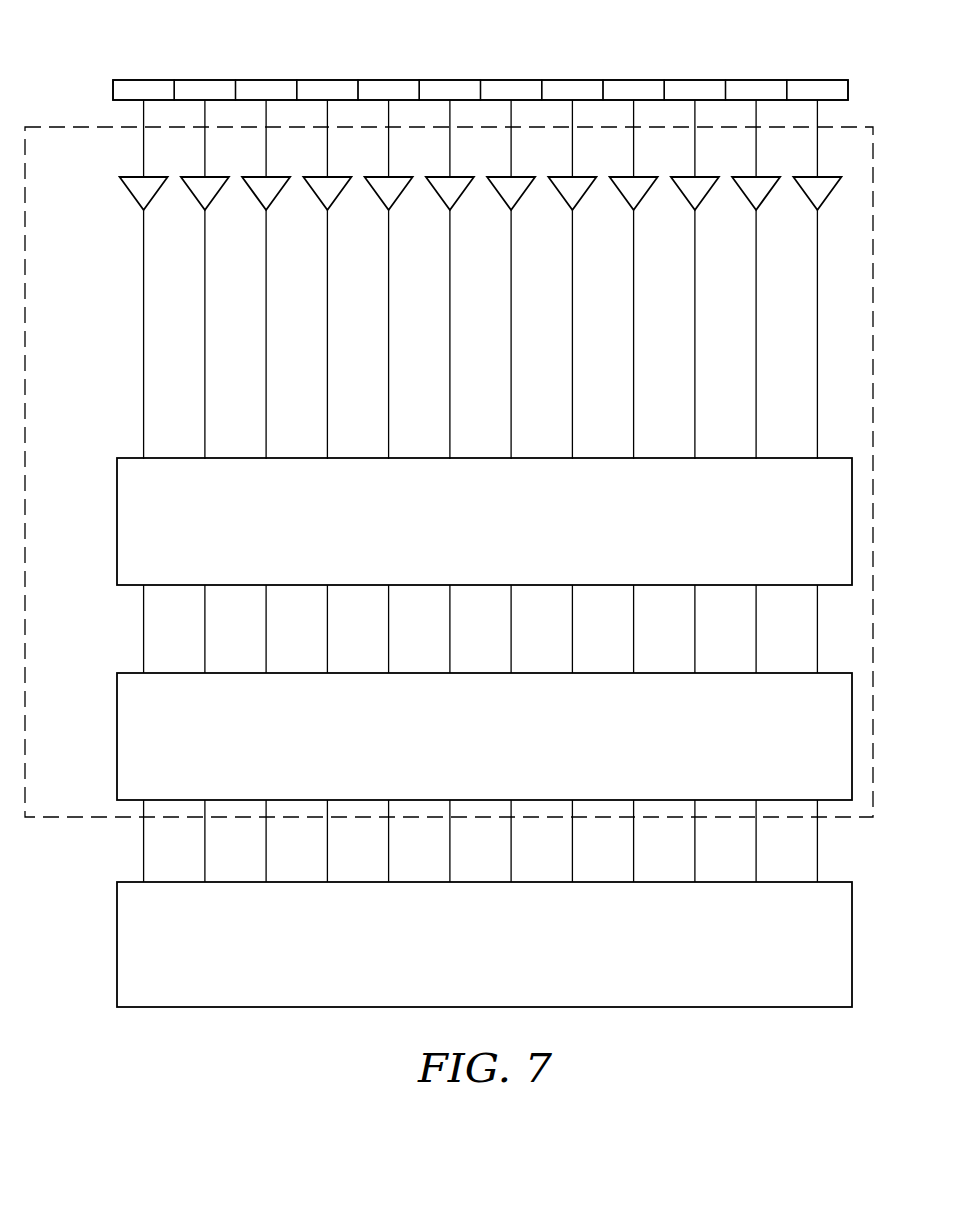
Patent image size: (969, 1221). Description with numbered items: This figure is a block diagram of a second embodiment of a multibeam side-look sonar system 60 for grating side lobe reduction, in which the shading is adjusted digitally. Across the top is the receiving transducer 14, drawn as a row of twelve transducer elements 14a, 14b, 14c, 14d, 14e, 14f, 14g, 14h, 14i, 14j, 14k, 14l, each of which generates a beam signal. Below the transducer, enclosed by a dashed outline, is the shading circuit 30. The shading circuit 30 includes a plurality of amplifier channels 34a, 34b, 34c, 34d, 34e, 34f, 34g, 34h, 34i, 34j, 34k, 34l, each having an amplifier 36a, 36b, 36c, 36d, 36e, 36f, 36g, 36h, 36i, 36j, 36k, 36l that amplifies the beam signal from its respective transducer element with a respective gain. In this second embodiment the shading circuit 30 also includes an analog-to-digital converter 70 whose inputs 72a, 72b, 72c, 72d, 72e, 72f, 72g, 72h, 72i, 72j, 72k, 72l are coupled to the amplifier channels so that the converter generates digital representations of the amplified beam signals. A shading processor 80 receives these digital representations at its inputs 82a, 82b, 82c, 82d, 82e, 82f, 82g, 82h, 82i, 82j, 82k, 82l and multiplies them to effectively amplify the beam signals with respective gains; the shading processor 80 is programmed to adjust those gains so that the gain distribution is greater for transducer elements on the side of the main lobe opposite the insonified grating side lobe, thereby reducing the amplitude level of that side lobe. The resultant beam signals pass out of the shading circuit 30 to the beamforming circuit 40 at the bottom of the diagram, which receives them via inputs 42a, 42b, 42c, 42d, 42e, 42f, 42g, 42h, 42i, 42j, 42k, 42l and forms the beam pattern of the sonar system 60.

The receiving transducer 14 is at (113, 92).
The transducer element 14a is at (143, 98).
The transducer element 14b is at (204, 98).
The transducer element 14c is at (266, 98).
The transducer element 14d is at (327, 98).
The transducer element 14e is at (388, 98).
The transducer element 14f is at (449, 98).
The transducer element 14g is at (511, 98).
The transducer element 14h is at (572, 98).
The transducer element 14i is at (633, 98).
The transducer element 14j is at (694, 98).
The transducer element 14k is at (756, 98).
The transducer element 14l is at (817, 98).
The shading circuit 30 is at (64, 791).
The amplifier 36a is at (156, 176).
The amplifier 36b is at (217, 176).
The amplifier 36c is at (278, 176).
The amplifier 36d is at (339, 176).
The amplifier 36e is at (401, 176).
The amplifier 36f is at (463, 176).
The amplifier 36g is at (523, 176).
The amplifier 36h is at (584, 176).
The amplifier 36i is at (645, 176).
The amplifier 36j is at (706, 176).
The amplifier 36k is at (769, 176).
The amplifier 36l is at (827, 176).
The amplifier channel 34a is at (170, 305).
The amplifier channel 34b is at (231, 305).
The amplifier channel 34c is at (292, 305).
The amplifier channel 34d is at (353, 305).
The amplifier channel 34e is at (415, 305).
The amplifier channel 34f is at (476, 305).
The amplifier channel 34g is at (537, 305).
The amplifier channel 34h is at (598, 305).
The amplifier channel 34i is at (658, 305).
The amplifier channel 34j is at (719, 305).
The amplifier channel 34k is at (782, 305).
The amplifier channel 34l is at (841, 305).
The analog-to-digital converter 70 is at (117, 508).
The input 72a is at (119, 429).
The input 72b is at (180, 429).
The input 72c is at (241, 429).
The input 72d is at (302, 429).
The input 72e is at (364, 429).
The input 72f is at (425, 429).
The input 72g is at (486, 429).
The input 72h is at (547, 429).
The input 72i is at (609, 429).
The input 72j is at (670, 429).
The input 72k is at (732, 429).
The input 72l is at (793, 429).
The shading processor 80 is at (117, 724).
The input 82a is at (119, 629).
The input 82b is at (180, 629).
The input 82c is at (241, 629).
The input 82d is at (302, 629).
The input 82e is at (364, 629).
The input 82f is at (425, 629).
The input 82g is at (486, 629).
The input 82h is at (547, 629).
The input 82i is at (609, 629).
The input 82j is at (670, 629).
The input 82k is at (732, 629).
The input 82l is at (793, 629).
The beamforming circuit 40 is at (117, 925).
The input 42a is at (119, 841).
The input 42b is at (180, 841).
The input 42c is at (241, 841).
The input 42d is at (302, 841).
The input 42e is at (364, 841).
The input 42f is at (425, 841).
The input 42g is at (486, 841).
The input 42h is at (547, 841).
The input 42i is at (609, 841).
The input 42j is at (670, 841).
The input 42k is at (732, 841).
The input 42l is at (793, 841).
The multibeam side-look sonar system 60 is at (69, 1020).